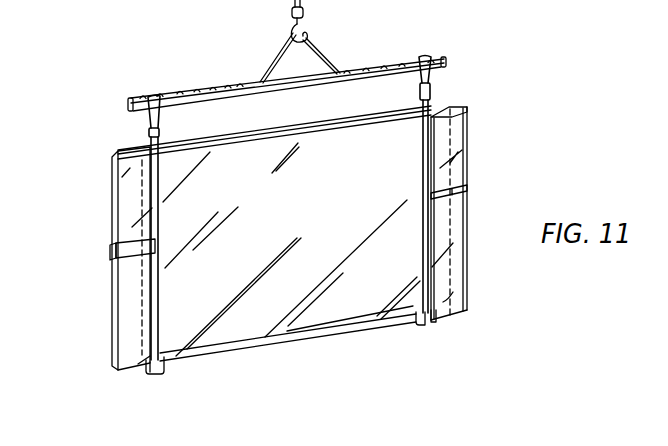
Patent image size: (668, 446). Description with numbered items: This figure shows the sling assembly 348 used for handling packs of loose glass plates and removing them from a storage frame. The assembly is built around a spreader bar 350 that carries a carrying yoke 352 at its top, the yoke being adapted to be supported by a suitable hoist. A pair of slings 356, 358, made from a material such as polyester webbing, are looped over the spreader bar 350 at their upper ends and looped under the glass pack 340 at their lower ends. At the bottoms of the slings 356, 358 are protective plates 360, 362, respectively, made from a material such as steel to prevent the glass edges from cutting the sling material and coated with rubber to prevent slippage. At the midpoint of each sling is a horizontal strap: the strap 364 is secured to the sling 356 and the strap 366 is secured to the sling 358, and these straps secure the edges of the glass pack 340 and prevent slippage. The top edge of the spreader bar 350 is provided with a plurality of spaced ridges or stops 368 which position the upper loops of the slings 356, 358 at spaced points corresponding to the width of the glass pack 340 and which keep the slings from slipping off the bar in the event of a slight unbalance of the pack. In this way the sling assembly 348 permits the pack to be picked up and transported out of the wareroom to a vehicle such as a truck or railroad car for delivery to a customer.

The glass pack 340 is at (133, 204).
The sling assembly 348 is at (126, 102).
The spreader bar 350 is at (238, 95).
The carrying yoke 352 is at (285, 61).
The sling 356 is at (160, 291).
The sling 358 is at (428, 256).
The protective plate 360 is at (148, 374).
The protective plate 362 is at (416, 326).
The horizontal strap 364 is at (112, 252).
The horizontal strap 366 is at (468, 189).
The ridges or stops 368 is at (404, 62).